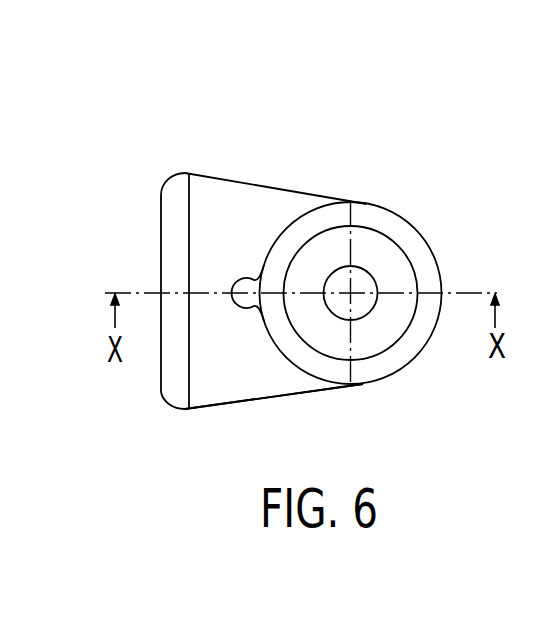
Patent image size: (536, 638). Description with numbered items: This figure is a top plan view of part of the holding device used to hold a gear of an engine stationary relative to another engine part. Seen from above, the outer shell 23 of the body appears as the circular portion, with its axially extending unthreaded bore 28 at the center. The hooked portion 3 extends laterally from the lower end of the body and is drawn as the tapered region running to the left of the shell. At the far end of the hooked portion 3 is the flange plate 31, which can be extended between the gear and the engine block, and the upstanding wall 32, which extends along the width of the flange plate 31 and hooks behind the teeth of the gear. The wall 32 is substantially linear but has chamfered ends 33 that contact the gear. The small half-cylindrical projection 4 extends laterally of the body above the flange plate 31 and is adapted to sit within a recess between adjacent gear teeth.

The hooked portion 3 is at (253, 203).
The projection 4 is at (258, 292).
The outer shell 23 is at (359, 204).
The bore 28 is at (352, 286).
The flange plate 31 is at (242, 386).
The upstanding wall 32 is at (168, 210).
The chamfered ends 33 is at (190, 178).